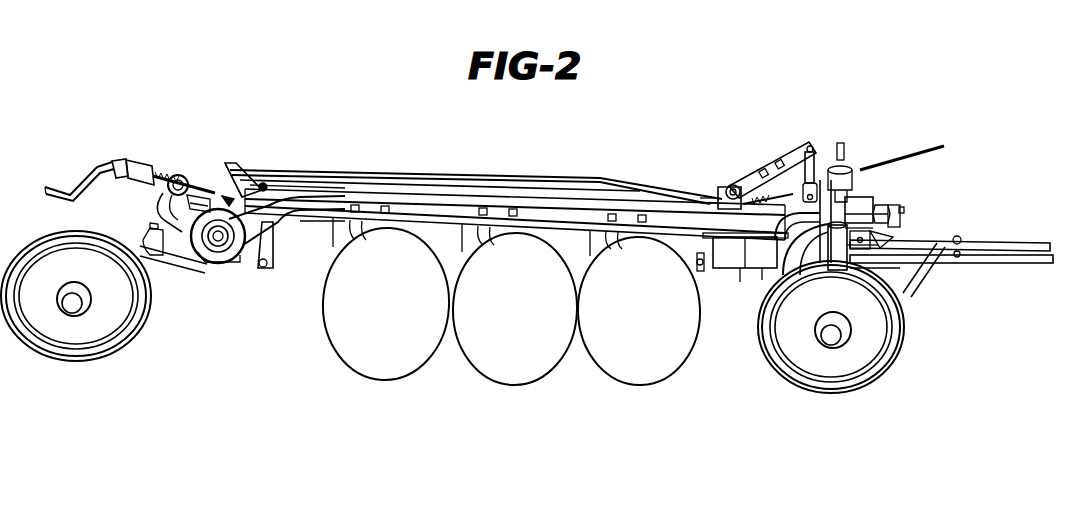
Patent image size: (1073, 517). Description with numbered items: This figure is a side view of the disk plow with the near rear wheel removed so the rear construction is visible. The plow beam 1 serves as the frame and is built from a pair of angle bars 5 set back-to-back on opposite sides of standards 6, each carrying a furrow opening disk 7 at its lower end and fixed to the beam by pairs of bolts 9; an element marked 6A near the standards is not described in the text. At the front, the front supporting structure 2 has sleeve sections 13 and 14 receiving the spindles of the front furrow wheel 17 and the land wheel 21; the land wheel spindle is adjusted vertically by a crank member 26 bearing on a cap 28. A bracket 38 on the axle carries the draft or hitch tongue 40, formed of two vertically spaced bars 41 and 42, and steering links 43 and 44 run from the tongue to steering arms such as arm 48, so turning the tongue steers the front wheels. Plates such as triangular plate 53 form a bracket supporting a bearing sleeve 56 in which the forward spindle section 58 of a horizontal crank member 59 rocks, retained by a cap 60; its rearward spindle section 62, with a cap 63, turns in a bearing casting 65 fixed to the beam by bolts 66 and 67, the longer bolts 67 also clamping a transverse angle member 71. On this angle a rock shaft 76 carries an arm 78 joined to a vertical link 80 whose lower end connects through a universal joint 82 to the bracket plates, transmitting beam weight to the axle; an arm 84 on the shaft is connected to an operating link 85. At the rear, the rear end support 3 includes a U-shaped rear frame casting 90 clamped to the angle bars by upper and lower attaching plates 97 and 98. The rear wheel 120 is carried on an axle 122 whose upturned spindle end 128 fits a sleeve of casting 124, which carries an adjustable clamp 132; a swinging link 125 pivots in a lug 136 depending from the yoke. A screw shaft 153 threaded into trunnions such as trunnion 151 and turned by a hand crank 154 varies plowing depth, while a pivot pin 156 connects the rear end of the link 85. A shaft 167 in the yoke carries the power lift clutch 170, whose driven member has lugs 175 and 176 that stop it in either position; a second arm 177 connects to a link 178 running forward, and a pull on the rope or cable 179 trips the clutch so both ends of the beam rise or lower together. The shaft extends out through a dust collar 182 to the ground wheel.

The plow beam 1 is at (455, 200).
The front supporting structure 2 is at (898, 128).
The rear end support 3 is at (154, 130).
The angle bars 5 is at (538, 205).
The standards 6 is at (334, 241).
The hanger bracket 6A is at (762, 275).
The furrow opening disks 7 is at (430, 364).
The bolts 9 is at (512, 209).
The spindle receiving sleeve section 13 is at (837, 262).
The sleeve section 14 is at (852, 205).
The front furrow wheel 17 is at (908, 331).
The land wheel 21 is at (900, 232).
The crank member 26 is at (845, 152).
The cap 28 is at (849, 172).
The bracket 38 is at (880, 206).
The draft or hitch tongue 40 is at (957, 267).
The bar 41 is at (1017, 263).
The bar 42 is at (1010, 243).
The steering link 43 is at (915, 281).
The steering link 44 is at (924, 262).
The steering arm 48 is at (872, 247).
The triangular plate 53 is at (825, 190).
The bearing sleeve 56 is at (871, 213).
The spindle section 58 is at (902, 212).
The crank member 59 is at (800, 266).
The cap 60 is at (905, 217).
The spindle section 62 is at (699, 257).
The cap 63 is at (697, 265).
The bearing casting 65 is at (740, 270).
The bolts 66 is at (746, 247).
The bolts 67 is at (735, 245).
The transverse angle member 71 is at (718, 196).
The rock shaft 76 is at (733, 185).
The arm 78 is at (785, 160).
The link 80 is at (811, 152).
The universal joint 82 is at (788, 199).
The arm 84 is at (762, 204).
The operating link 85 is at (600, 178).
The rear frame casting 90 is at (300, 207).
The upper attaching plate 97 is at (330, 188).
The lower attaching plate 98 is at (303, 224).
The rear wheel 120 is at (66, 235).
The axle 122 is at (150, 284).
The casting 124 is at (192, 272).
The swinging link 125 is at (262, 270).
The spindle end 128 is at (198, 194).
The clamp 132 is at (143, 243).
The lug 136 is at (273, 230).
The trunnion 151 is at (179, 175).
The screw shaft 153 is at (158, 190).
The hand crank 154 is at (105, 165).
The pivot pin 156 is at (266, 183).
The shaft 167 is at (226, 244).
The power lift clutch 170 is at (232, 285).
The lug 175 is at (227, 196).
The lug 176 is at (221, 268).
The arm 177 is at (248, 180).
The link 178 is at (678, 196).
The rope or cable 179 is at (922, 147).
The dust collar 182 is at (212, 264).